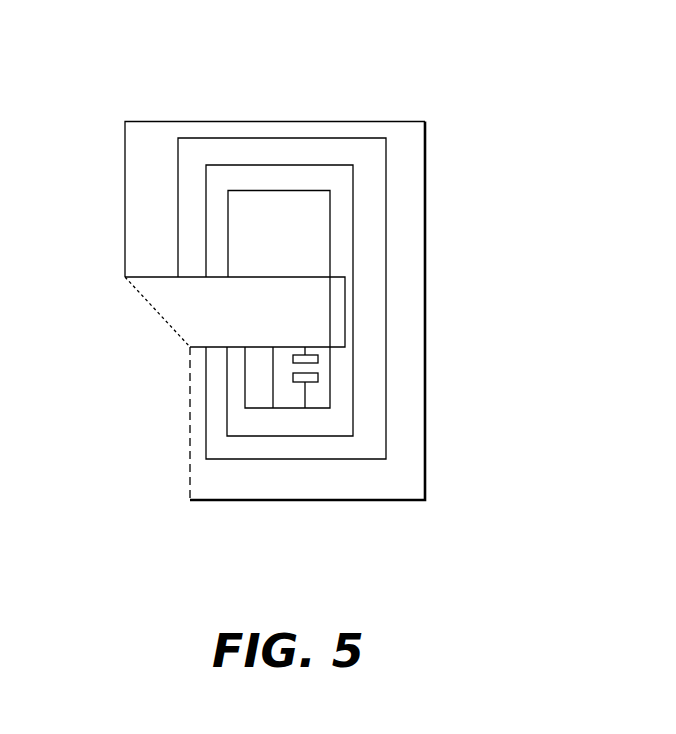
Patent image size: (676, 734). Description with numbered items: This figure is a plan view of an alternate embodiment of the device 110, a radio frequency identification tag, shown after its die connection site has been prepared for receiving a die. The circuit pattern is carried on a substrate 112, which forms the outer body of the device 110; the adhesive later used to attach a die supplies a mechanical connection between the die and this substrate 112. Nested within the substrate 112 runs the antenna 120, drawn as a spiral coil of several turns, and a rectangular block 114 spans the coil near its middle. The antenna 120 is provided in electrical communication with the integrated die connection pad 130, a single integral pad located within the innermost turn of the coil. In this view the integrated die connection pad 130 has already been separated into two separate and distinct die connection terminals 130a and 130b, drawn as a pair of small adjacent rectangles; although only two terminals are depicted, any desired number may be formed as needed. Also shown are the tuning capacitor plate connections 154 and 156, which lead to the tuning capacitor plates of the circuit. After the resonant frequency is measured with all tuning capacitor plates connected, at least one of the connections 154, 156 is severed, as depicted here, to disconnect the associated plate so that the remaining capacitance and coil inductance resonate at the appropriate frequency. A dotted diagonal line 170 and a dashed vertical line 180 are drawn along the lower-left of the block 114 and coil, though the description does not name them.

The device 110 is at (304, 322).
The substrate 112 is at (427, 193).
The integrated circuit chip / module 114 is at (272, 323).
The antenna 120 is at (178, 193).
The integrated die connection pad 130 is at (430, 397).
The die connection terminal 130a is at (308, 352).
The die connection terminal 130b is at (307, 383).
The tuning capacitor plate connection 154 is at (245, 383).
The tuning capacitor plate connection 156 is at (273, 383).
The fold line 170 is at (152, 308).
The folded edge (hidden) 180 is at (188, 480).